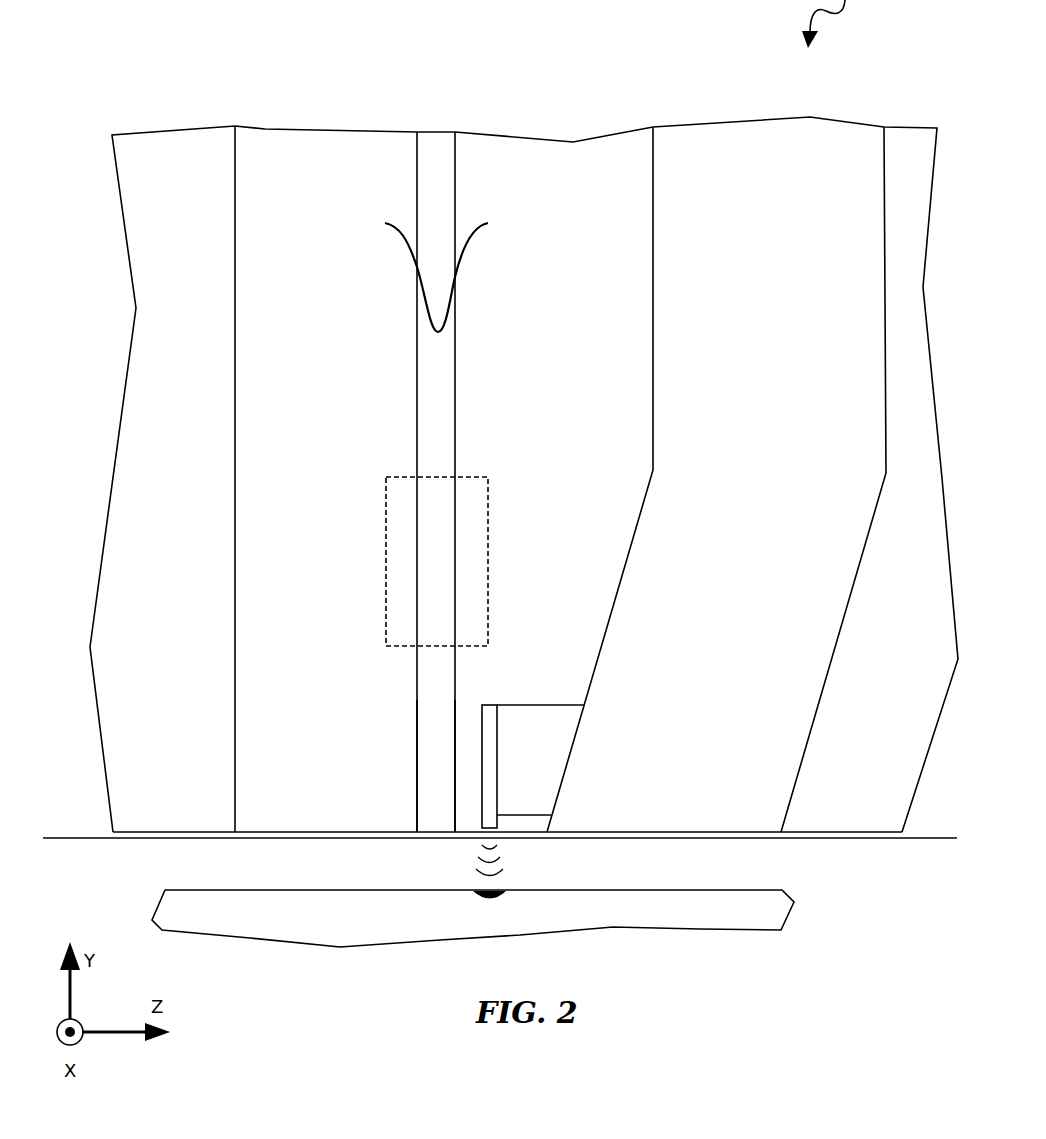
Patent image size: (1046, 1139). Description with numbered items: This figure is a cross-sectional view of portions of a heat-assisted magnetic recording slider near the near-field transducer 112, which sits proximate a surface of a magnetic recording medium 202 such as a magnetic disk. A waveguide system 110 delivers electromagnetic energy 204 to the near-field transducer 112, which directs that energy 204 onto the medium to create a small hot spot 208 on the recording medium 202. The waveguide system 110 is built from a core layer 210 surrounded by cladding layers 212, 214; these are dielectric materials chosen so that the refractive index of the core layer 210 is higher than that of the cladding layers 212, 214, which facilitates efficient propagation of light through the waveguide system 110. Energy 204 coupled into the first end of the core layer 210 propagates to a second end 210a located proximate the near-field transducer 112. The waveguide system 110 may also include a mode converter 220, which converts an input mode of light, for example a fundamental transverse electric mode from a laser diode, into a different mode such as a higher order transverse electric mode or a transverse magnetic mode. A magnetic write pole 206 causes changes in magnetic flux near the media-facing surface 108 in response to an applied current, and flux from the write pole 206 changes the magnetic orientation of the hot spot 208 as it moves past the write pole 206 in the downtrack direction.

The waveguide system 110 is at (647, 87).
The cladding layer 214 is at (262, 127).
The core layer 210 is at (440, 132).
The cladding layer 212 is at (490, 147).
The magnetic write pole 206 is at (788, 117).
The electromagnetic energy 204 is at (405, 238).
The mode converter 220 is at (386, 610).
The second end 210a is at (417, 770).
The near-field transducer 112 is at (486, 806).
The media-facing surface 108 is at (843, 841).
The magnetic recording medium 202 is at (225, 915).
The hot spot 208 is at (490, 903).